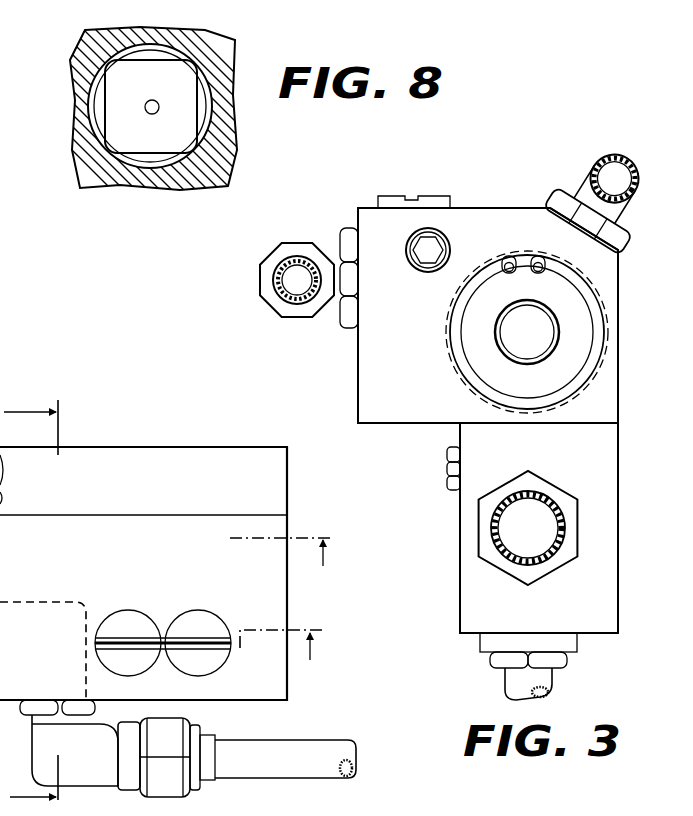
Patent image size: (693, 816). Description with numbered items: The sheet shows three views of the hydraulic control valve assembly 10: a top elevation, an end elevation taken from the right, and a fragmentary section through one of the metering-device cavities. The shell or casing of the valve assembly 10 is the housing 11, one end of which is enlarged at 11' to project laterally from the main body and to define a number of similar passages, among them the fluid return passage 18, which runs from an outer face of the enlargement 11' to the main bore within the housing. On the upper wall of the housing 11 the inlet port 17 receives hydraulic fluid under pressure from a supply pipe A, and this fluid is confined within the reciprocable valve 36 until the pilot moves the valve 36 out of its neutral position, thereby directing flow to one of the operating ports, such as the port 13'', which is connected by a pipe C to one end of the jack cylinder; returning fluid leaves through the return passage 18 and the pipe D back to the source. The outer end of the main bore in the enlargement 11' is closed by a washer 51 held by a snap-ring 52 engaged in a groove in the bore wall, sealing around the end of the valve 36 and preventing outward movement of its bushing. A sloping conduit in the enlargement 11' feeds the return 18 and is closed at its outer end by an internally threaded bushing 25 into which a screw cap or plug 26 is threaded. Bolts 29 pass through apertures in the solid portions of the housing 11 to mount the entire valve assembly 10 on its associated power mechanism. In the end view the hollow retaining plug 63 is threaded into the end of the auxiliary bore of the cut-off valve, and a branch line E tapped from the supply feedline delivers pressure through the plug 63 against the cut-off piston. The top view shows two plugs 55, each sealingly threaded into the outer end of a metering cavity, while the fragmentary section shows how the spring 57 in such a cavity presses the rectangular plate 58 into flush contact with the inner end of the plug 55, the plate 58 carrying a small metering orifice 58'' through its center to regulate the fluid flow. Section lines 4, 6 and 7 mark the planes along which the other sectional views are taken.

In FIG. 3, the valve assembly 10 is at (496, 208).
In FIG. 2, the valve assembly 10 is at (143, 573).
In FIG. 8, the housing 11 is at (186, 110).
In FIG. 3, the housing 11 is at (488, 306).
In FIG. 3, the enlargement 11' is at (337, 361).
In FIG. 3, the port 13'' is at (550, 528).
In FIG. 3, the inlet port 17 is at (604, 220).
In FIG. 3, the fluid return passage 18 is at (347, 262).
In FIG. 2, the fluid return passage 18 is at (55, 714).
In FIG. 3, the internally threaded bushing 25 is at (440, 243).
In FIG. 3, the screw cap or plug 26 is at (432, 250).
In FIG. 3, the bolts 29 is at (452, 470).
In FIG. 3, the valve 36 is at (527, 332).
In FIG. 3, the washer 51 is at (575, 334).
In FIG. 3, the snap-ring 52 is at (556, 380).
In FIG. 3, the plug 55 is at (420, 204).
In FIG. 2, the plug 55 is at (133, 672).
In FIG. 8, the spring 57 is at (97, 100).
In FIG. 8, the rectangular plate 58 is at (116, 106).
In FIG. 8, the metering orifice 58'' is at (169, 101).
In FIG. 3, the hollow retaining plug 63 is at (556, 645).
In FIG. 3, the pipe A is at (636, 172).
In FIG. 3, the pipe C is at (568, 526).
In FIG. 3, the pipe D is at (280, 280).
In FIG. 2, the pipe D is at (300, 748).
In FIG. 3, the branch line E is at (540, 683).
In FIG. 2, the section line 4 is at (280, 540).
In FIG. 2, the section line 6 is at (281, 633).
In FIG. 2, the section line 7 is at (39, 606).